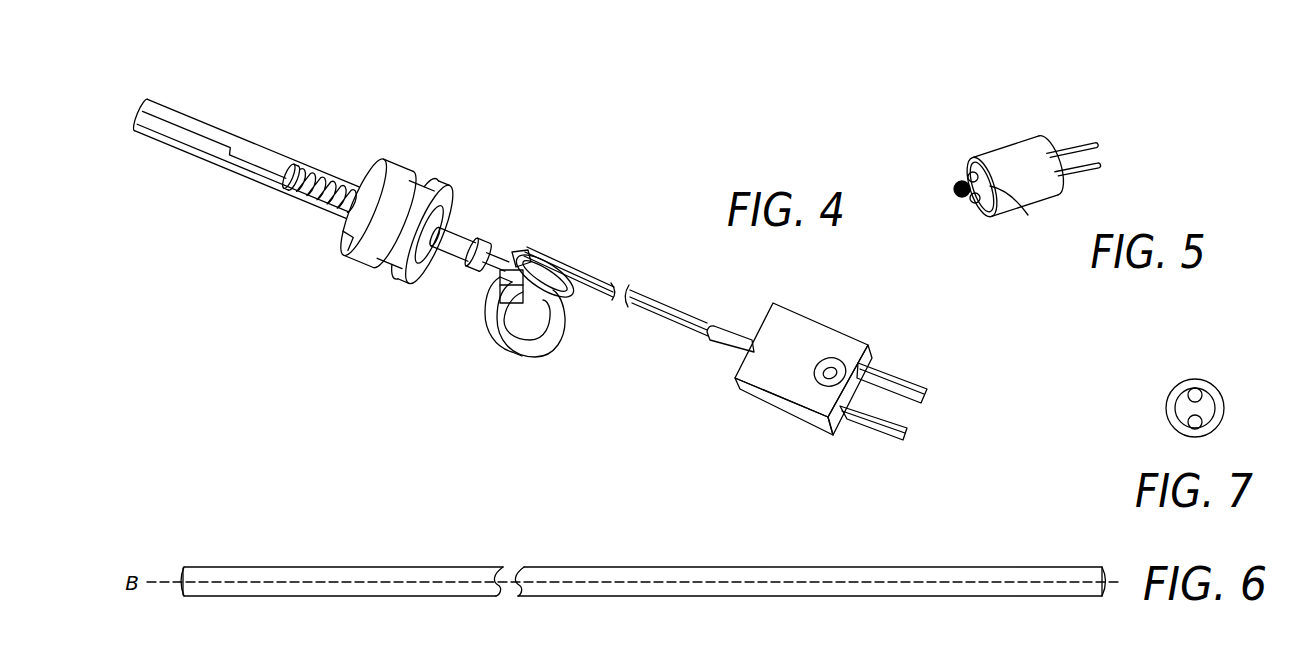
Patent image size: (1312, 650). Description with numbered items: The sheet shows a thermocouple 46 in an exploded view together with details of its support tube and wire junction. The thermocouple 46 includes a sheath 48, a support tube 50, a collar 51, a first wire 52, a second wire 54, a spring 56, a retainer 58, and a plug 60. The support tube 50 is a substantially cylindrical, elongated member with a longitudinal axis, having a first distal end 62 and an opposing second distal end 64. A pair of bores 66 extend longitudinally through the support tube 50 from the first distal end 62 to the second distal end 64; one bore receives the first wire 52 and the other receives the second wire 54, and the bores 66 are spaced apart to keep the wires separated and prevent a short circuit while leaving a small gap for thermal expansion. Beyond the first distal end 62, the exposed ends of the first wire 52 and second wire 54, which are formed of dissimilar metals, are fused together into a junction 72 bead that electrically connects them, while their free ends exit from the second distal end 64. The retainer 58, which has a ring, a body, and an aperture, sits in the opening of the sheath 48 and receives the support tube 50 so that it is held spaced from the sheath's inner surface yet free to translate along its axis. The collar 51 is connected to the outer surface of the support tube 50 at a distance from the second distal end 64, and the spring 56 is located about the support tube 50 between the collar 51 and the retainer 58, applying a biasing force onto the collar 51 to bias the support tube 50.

In FIG. 4, the thermocouple 46 is at (316, 102).
In FIG. 4, the sheath 48 is at (183, 113).
In FIG. 4, the support tube 50 is at (197, 140).
In FIG. 5, the support tube 50 is at (1008, 148).
In FIG. 7, the support tube 50 is at (1150, 412).
In FIG. 6, the support tube 50 is at (406, 540).
In FIG. 4, the collar 51 is at (294, 170).
In FIG. 4, the first wire 52 is at (657, 299).
In FIG. 5, the first wire 52 is at (1073, 141).
In FIG. 4, the second wire 54 is at (662, 313).
In FIG. 5, the second wire 54 is at (1089, 170).
In FIG. 4, the spring 56 is at (322, 204).
In FIG. 4, the retainer 58 is at (492, 249).
In FIG. 4, the plug 60 is at (750, 395).
In FIG. 5, the first distal end 62 is at (1018, 212).
In FIG. 6, the first distal end 62 is at (181, 587).
In FIG. 6, the second distal end 64 is at (1108, 571).
In FIG. 5, the bores 66 is at (971, 173).
In FIG. 7, the bores 66 is at (1199, 393).
In FIG. 5, the junction 72 is at (955, 193).